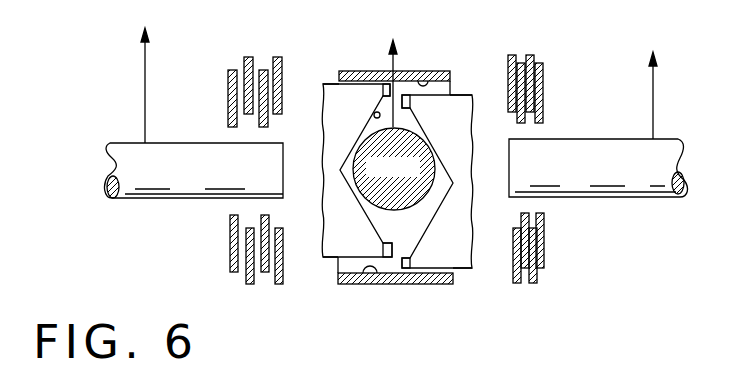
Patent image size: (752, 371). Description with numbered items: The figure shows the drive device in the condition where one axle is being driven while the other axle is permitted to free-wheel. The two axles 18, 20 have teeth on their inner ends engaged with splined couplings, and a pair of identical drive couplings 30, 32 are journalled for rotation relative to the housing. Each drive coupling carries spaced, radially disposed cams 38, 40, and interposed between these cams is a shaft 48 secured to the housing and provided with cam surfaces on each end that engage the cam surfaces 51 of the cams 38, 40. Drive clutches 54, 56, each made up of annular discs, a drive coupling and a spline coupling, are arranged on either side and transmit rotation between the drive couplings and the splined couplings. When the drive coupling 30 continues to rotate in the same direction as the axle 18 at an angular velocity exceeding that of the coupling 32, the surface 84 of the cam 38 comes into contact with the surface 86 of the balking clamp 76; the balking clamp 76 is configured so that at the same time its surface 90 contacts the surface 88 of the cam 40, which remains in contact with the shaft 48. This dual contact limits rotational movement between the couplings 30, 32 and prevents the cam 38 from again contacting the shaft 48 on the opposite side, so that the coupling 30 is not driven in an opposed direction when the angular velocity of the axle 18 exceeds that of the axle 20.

The axle 18 is at (109, 143).
The axle 20 is at (683, 139).
The drive coupling 30 is at (331, 163).
The drive coupling 32 is at (471, 169).
The cam 38 is at (333, 228).
The cam 40 is at (463, 243).
The shaft 48 is at (394, 169).
The cam surface 51 is at (374, 114).
The drive clutch 54 is at (218, 98).
The drive clutch 56 is at (548, 85).
The balking clamp 76 is at (368, 71).
The surface 84 is at (332, 84).
The surface 86 is at (424, 78).
The surface 88 is at (338, 260).
The surface 90 is at (372, 277).